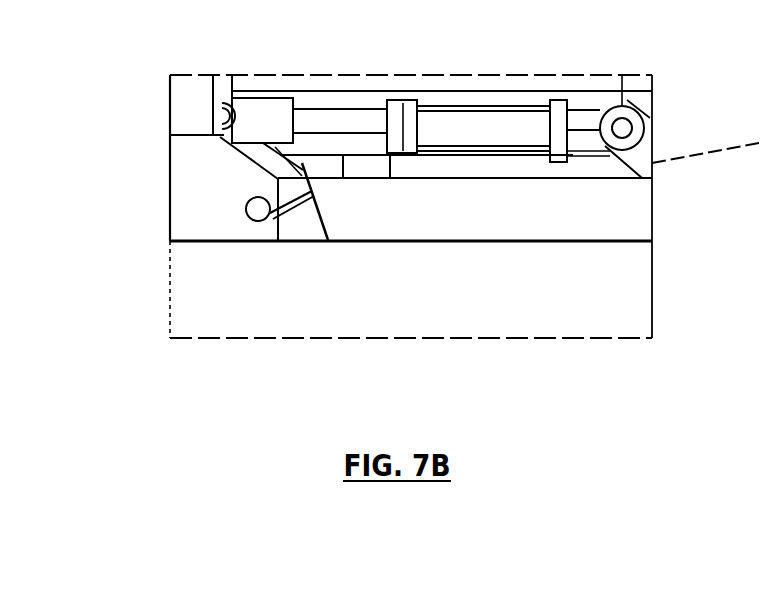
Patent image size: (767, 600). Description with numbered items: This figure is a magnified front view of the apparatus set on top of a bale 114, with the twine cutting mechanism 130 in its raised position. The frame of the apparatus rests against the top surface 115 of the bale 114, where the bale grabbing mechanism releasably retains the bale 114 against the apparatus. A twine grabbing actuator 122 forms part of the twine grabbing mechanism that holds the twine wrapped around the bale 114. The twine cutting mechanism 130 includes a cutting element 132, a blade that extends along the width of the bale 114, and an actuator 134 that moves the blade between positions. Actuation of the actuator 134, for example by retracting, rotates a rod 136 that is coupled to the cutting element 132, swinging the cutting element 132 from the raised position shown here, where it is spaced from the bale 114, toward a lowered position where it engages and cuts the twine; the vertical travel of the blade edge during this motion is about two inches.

The bale 114 is at (548, 300).
The top surface 115 is at (447, 236).
The twine grabbing actuator 122 is at (598, 239).
The twine cutting mechanism 130 is at (243, 216).
The cutting element 132 is at (326, 228).
The actuator 134 is at (431, 120).
The rod 136 is at (256, 204).